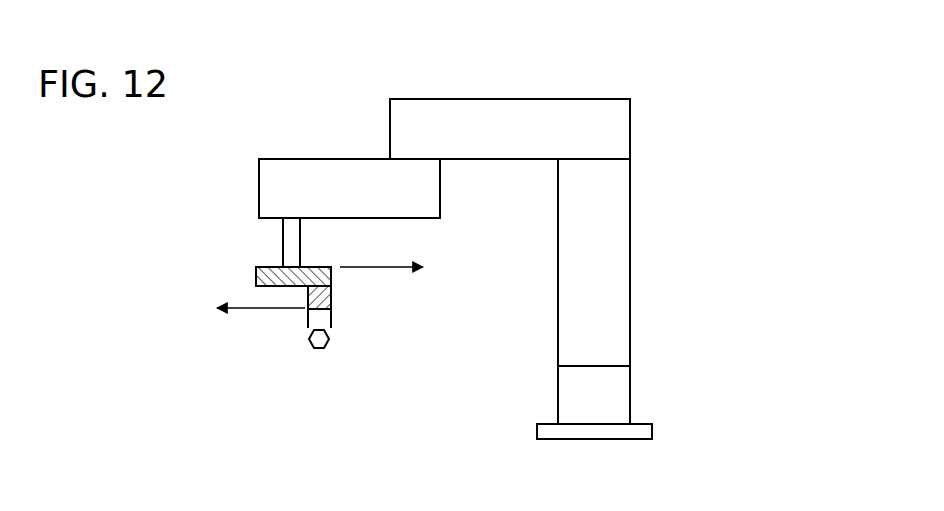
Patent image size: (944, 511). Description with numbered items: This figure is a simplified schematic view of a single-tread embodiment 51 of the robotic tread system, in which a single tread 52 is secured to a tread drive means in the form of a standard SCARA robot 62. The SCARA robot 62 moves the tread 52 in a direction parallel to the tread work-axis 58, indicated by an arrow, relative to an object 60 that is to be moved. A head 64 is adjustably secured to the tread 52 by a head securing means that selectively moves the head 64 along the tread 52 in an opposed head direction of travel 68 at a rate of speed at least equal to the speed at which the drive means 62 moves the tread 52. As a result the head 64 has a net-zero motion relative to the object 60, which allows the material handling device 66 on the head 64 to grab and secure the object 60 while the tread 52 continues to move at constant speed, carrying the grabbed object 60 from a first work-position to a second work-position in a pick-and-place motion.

The single-tread embodiment of the robotic tread system 51 is at (704, 98).
The SCARA robot 62 is at (318, 170).
The tread 52 is at (263, 267).
The head 64 is at (330, 295).
The material handling device 66 is at (331, 320).
The object 60 is at (318, 343).
The tread work-axis 58 is at (360, 265).
The head direction of travel 68 is at (262, 311).